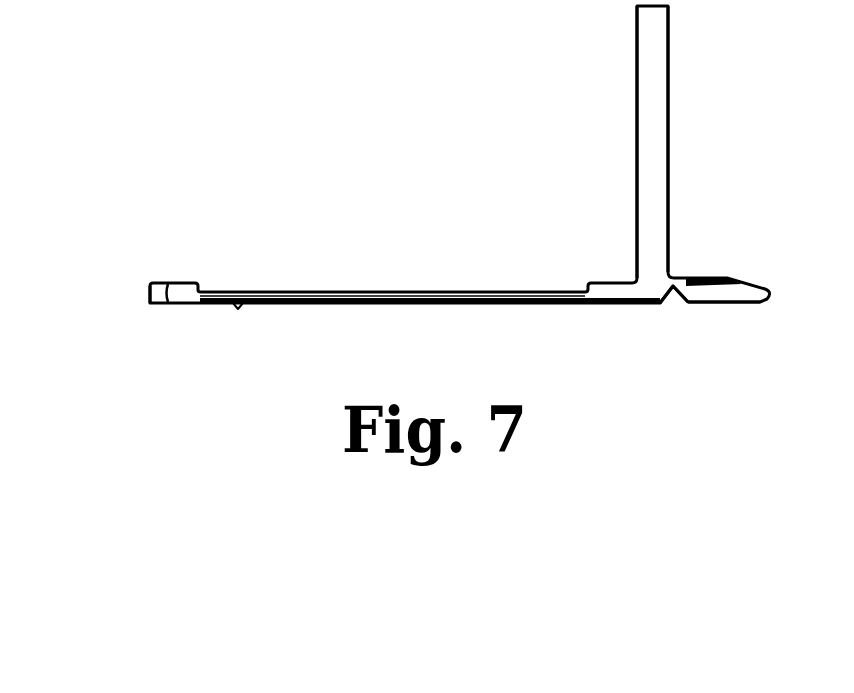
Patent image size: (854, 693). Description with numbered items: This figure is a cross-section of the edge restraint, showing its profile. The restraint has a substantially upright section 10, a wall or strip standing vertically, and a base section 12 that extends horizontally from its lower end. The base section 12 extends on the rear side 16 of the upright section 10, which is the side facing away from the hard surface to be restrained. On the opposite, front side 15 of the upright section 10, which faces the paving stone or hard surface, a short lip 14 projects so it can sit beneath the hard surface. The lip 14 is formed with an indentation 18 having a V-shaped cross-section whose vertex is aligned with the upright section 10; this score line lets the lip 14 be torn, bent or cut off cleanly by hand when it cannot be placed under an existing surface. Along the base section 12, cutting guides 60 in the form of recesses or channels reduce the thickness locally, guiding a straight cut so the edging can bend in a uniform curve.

The upright section 10 is at (660, 166).
The base section 12 is at (150, 292).
The lip 14 is at (742, 292).
The front side 15 is at (700, 90).
The rear side 16 is at (612, 142).
The indentation 18 is at (670, 293).
The cutting guides 60 is at (318, 290).